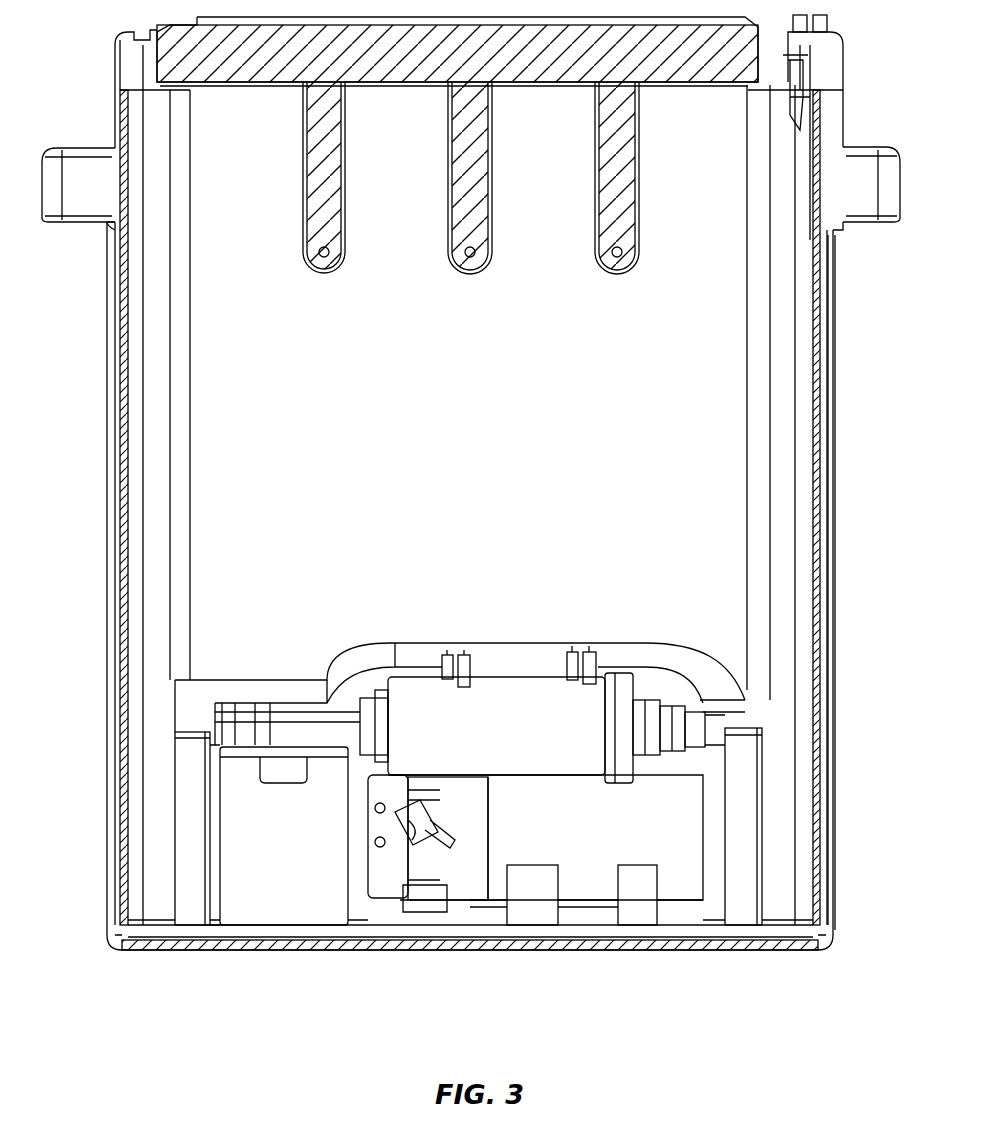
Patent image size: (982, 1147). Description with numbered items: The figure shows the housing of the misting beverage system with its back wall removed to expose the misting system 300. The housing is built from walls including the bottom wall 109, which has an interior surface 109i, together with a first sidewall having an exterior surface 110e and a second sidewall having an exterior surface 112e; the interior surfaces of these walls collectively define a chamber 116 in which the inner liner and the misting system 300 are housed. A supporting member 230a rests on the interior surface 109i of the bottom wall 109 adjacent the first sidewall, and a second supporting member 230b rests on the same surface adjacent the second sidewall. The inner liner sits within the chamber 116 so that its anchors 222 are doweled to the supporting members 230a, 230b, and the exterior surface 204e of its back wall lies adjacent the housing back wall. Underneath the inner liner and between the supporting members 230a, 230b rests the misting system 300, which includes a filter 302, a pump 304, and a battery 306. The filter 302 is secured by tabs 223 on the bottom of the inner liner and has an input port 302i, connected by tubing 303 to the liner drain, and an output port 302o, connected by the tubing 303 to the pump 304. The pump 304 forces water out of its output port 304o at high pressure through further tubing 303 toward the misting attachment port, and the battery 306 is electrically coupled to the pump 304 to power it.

The exterior surface of the first sidewall 110e is at (114, 512).
The exterior surface of the second sidewall 112e is at (841, 410).
The chamber 116 is at (776, 327).
The exterior surface of the back wall of the inner liner 204e is at (228, 397).
The tubing 303 is at (792, 100).
The anchors 222 is at (180, 705).
The filter 302 is at (612, 703).
The output port of the filter 302o is at (358, 718).
The input port of the filter 302i is at (650, 712).
The tabs 223 is at (587, 648).
The supporting member 230a is at (185, 803).
The second supporting member 230b is at (740, 773).
The battery 306 is at (250, 886).
The misting system 300 is at (208, 880).
The pump 304 is at (692, 838).
The output port of the pump 304o is at (392, 818).
The bottom wall 109 is at (583, 960).
The interior surface of the bottom wall 109i is at (726, 929).